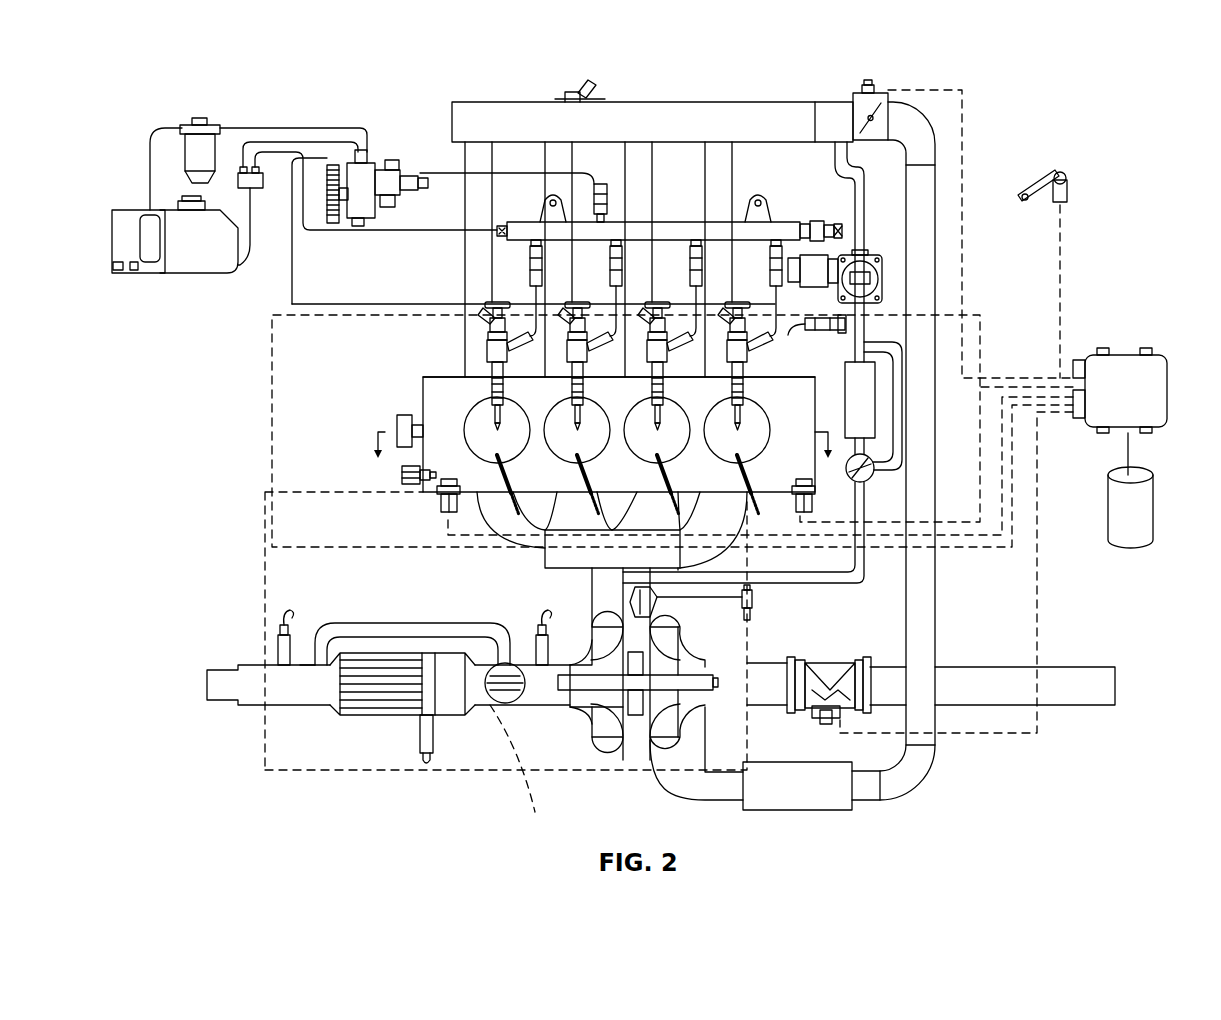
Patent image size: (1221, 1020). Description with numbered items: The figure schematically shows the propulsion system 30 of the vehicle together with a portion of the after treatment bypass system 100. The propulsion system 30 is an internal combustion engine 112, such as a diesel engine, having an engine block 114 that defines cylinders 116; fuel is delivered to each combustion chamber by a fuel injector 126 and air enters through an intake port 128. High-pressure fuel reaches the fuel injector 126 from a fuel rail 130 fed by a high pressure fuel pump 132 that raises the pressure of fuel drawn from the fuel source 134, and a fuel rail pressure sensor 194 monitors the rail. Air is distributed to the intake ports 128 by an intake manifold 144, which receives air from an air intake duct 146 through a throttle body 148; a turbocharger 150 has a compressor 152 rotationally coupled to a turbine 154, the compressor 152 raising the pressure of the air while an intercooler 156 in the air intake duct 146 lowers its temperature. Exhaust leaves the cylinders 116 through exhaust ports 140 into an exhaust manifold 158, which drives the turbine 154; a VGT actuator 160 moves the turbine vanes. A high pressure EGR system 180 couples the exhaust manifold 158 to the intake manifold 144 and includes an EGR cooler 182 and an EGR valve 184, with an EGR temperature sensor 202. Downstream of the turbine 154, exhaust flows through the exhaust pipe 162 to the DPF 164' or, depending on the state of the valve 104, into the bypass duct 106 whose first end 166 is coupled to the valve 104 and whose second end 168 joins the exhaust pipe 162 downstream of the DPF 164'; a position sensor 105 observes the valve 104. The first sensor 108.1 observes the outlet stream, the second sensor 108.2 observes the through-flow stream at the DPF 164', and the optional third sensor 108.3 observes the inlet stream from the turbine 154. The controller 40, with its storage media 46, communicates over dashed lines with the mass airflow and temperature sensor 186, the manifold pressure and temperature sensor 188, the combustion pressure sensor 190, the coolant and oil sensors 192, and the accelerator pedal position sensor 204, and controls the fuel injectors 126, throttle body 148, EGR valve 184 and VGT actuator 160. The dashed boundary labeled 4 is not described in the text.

The propulsion system 30 is at (295, 85).
The high pressure fuel pump 132 is at (385, 163).
The fuel source 134 is at (205, 267).
The fuel rail 130 is at (507, 238).
The fuel injector 126 is at (488, 352).
The internal combustion engine 112 is at (752, 92).
The intake manifold 144 is at (665, 115).
The manifold pressure and temperature sensor 188 is at (560, 93).
The throttle body 148 is at (875, 85).
The air intake duct 146 is at (935, 640).
The mass airflow and temperature sensor 186 is at (808, 715).
The high pressure exhaust gas recirculation system 180 is at (822, 594).
The EGR cooler 182 is at (862, 405).
The fuel rail pressure sensor 194 is at (838, 222).
The EGR valve 184 is at (872, 257).
The EGR temperature sensor 202 is at (806, 332).
The accelerator pedal position sensor 204 is at (1080, 190).
The controller 40 is at (1122, 352).
The computer readable storage device or media 46 is at (1145, 512).
The engine block 114 is at (423, 398).
The intake port 128 is at (470, 379).
The cylinder 116 is at (758, 420).
The coolant and oil temperature and level sensors 192 is at (410, 488).
The combustion pressure sensor 190 is at (520, 518).
The exhaust port 140 is at (488, 503).
The exhaust manifold 158 is at (582, 553).
The VGT actuator 160 is at (660, 600).
The turbocharger 150 is at (616, 762).
The turbine 154 is at (598, 740).
The compressor 152 is at (665, 728).
The intercooler 156 is at (820, 797).
The after treatment bypass system 100 is at (253, 646).
The aftertreatment boundary 4 is at (358, 772).
The exhaust pipe 162 is at (213, 692).
The diesel particulate filter 164' is at (402, 709).
The second sensor 108.2 is at (430, 765).
The bypass duct 106 is at (378, 613).
The second end 168 is at (310, 660).
The first sensor 108.1 is at (280, 620).
The first end 166 is at (510, 662).
The valve 104 is at (488, 704).
The third sensor 108.3 is at (600, 735).
The position sensor 105 is at (523, 771).